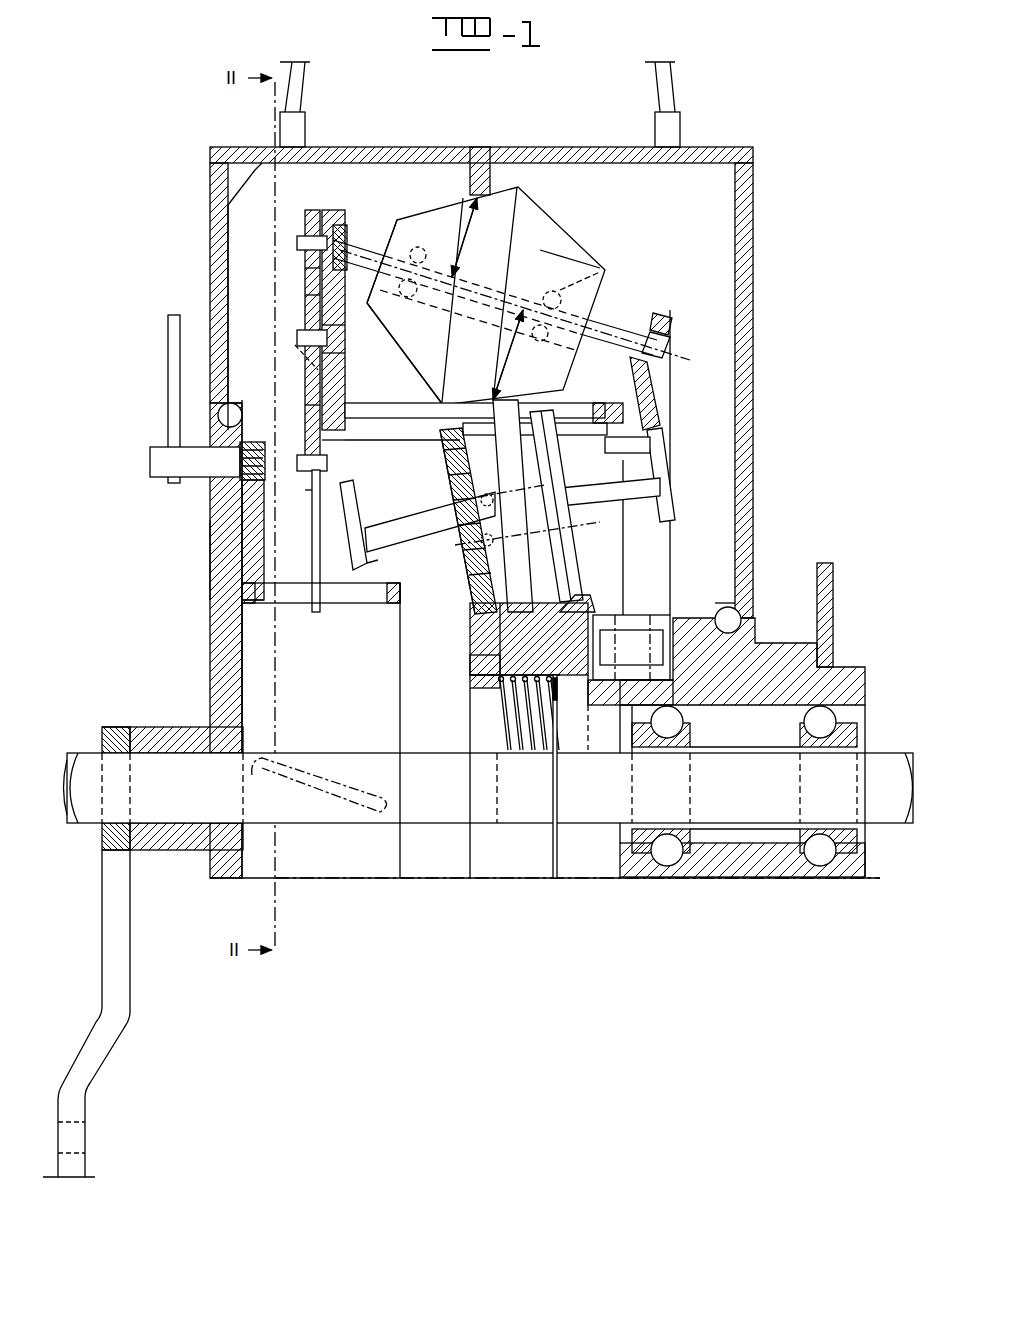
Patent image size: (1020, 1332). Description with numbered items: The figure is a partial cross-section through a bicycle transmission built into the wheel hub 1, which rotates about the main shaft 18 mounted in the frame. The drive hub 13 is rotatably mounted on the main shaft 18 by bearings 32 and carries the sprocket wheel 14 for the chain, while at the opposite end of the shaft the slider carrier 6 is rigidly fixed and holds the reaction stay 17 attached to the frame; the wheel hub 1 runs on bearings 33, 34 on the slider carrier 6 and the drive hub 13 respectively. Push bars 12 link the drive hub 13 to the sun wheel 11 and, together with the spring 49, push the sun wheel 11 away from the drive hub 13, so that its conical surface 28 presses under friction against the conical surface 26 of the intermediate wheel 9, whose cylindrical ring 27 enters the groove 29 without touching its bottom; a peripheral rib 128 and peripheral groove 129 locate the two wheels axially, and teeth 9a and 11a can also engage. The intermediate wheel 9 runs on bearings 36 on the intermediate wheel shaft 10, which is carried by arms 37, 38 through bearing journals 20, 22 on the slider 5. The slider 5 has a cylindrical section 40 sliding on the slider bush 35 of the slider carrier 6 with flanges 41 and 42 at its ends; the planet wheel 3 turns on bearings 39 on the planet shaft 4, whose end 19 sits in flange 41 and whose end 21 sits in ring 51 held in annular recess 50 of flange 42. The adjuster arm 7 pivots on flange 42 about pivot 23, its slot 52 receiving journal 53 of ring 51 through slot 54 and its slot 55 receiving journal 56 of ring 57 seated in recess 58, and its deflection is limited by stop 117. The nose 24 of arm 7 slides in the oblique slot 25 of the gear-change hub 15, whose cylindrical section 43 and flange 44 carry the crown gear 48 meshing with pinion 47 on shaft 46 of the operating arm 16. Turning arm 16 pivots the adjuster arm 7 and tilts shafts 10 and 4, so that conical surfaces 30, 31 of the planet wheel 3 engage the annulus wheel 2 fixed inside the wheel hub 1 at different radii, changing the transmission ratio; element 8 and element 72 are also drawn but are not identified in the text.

The wheel hub 1 is at (748, 182).
The annulus wheel 2 is at (468, 165).
The planet wheel 3 is at (412, 228).
The planet shaft 4 is at (608, 330).
The slider 5 is at (684, 383).
The slider carrier 6 is at (208, 560).
The adjuster arm 7 is at (345, 355).
The link rod 8 is at (672, 510).
The intermediate wheel 9 is at (592, 548).
The teeth 9a is at (440, 470).
The intermediate wheel shaft 10 is at (408, 515).
The sun wheel 11 is at (470, 688).
The teeth 11a is at (472, 640).
The push bars 12 is at (640, 665).
The drive hub 13 is at (760, 648).
The sprocket wheel 14 is at (833, 620).
The gear-change hub 15 is at (280, 700).
The operating arm 16 is at (168, 392).
The reaction stay 17 is at (130, 960).
The main shaft 18 is at (285, 810).
The end of shaft 4 19 is at (672, 330).
The bearing journal 20 is at (605, 448).
The end of the planet shaft 21 is at (357, 228).
The bearing journal 22 is at (343, 550).
The pivot 23 is at (302, 246).
The nose 24 is at (312, 618).
The slot 25 is at (345, 595).
The conical surface 26 is at (585, 580).
The cylindrical ring 27 is at (465, 552).
The conical surface 28 is at (585, 600).
The groove 29 is at (472, 667).
The conical surface 30 is at (392, 338).
The conical surface 31 is at (425, 372).
The bearings 32 is at (680, 860).
The bearing 33 is at (236, 415).
The bearing 34 is at (722, 612).
The slider bush 35 is at (400, 420).
The bearings 36 is at (575, 528).
The arm 37 is at (668, 450).
The arm 38 is at (370, 565).
The bearings 39 is at (607, 275).
The cylindrical section 40 is at (598, 405).
The flange 41 is at (650, 400).
The flange 42 is at (345, 380).
The cylindrical section 43 is at (405, 612).
The flange 44 is at (264, 552).
The shaft 46 is at (195, 465).
The pinion 47 is at (265, 452).
The crown gear 48 is at (264, 520).
The spring 49 is at (537, 710).
The annular recess 50 is at (305, 270).
The ring 51 is at (335, 285).
The slot 52 is at (305, 297).
The journal 53 is at (303, 337).
The slot 54 is at (345, 327).
The slot 55 is at (308, 407).
The journal 56 is at (308, 494).
The ring 57 is at (330, 470).
The recess 58 is at (345, 445).
The block 72 is at (560, 235).
The stop 117 is at (290, 350).
The peripheral rib 128 is at (562, 692).
The peripheral groove 129 is at (590, 683).